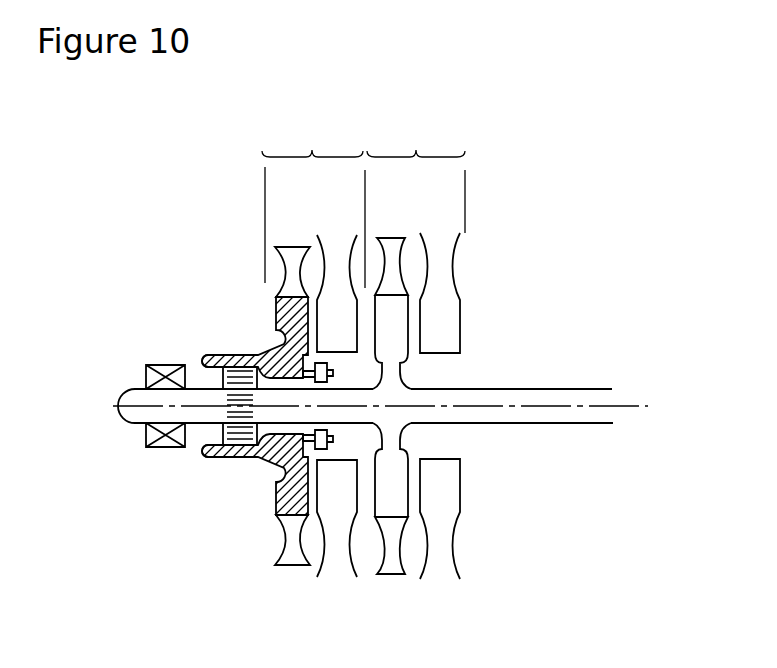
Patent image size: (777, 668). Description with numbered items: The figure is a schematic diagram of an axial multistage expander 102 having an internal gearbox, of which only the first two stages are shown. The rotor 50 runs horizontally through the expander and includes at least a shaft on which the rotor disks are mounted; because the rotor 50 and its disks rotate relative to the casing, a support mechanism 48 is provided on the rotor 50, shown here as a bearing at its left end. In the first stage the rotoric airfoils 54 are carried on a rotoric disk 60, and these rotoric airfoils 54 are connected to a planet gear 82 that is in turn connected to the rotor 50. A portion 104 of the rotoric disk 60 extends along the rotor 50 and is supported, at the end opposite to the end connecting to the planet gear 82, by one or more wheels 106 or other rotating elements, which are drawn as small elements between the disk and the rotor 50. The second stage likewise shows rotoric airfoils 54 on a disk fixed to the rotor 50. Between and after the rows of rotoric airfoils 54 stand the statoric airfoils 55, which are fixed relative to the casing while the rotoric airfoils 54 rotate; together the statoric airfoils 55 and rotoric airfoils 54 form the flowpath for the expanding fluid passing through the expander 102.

The axial multistage expander 102 is at (597, 108).
The rotor 50 is at (548, 408).
The support mechanism 48 is at (162, 367).
The planet gear 82 is at (239, 432).
The portion of the rotoric disk 104 is at (283, 456).
The rotoric disk 60 is at (293, 442).
The rotoric airfoils 54 is at (283, 270).
The statoric airfoils 55 is at (337, 320).
The wheels 106 is at (320, 449).